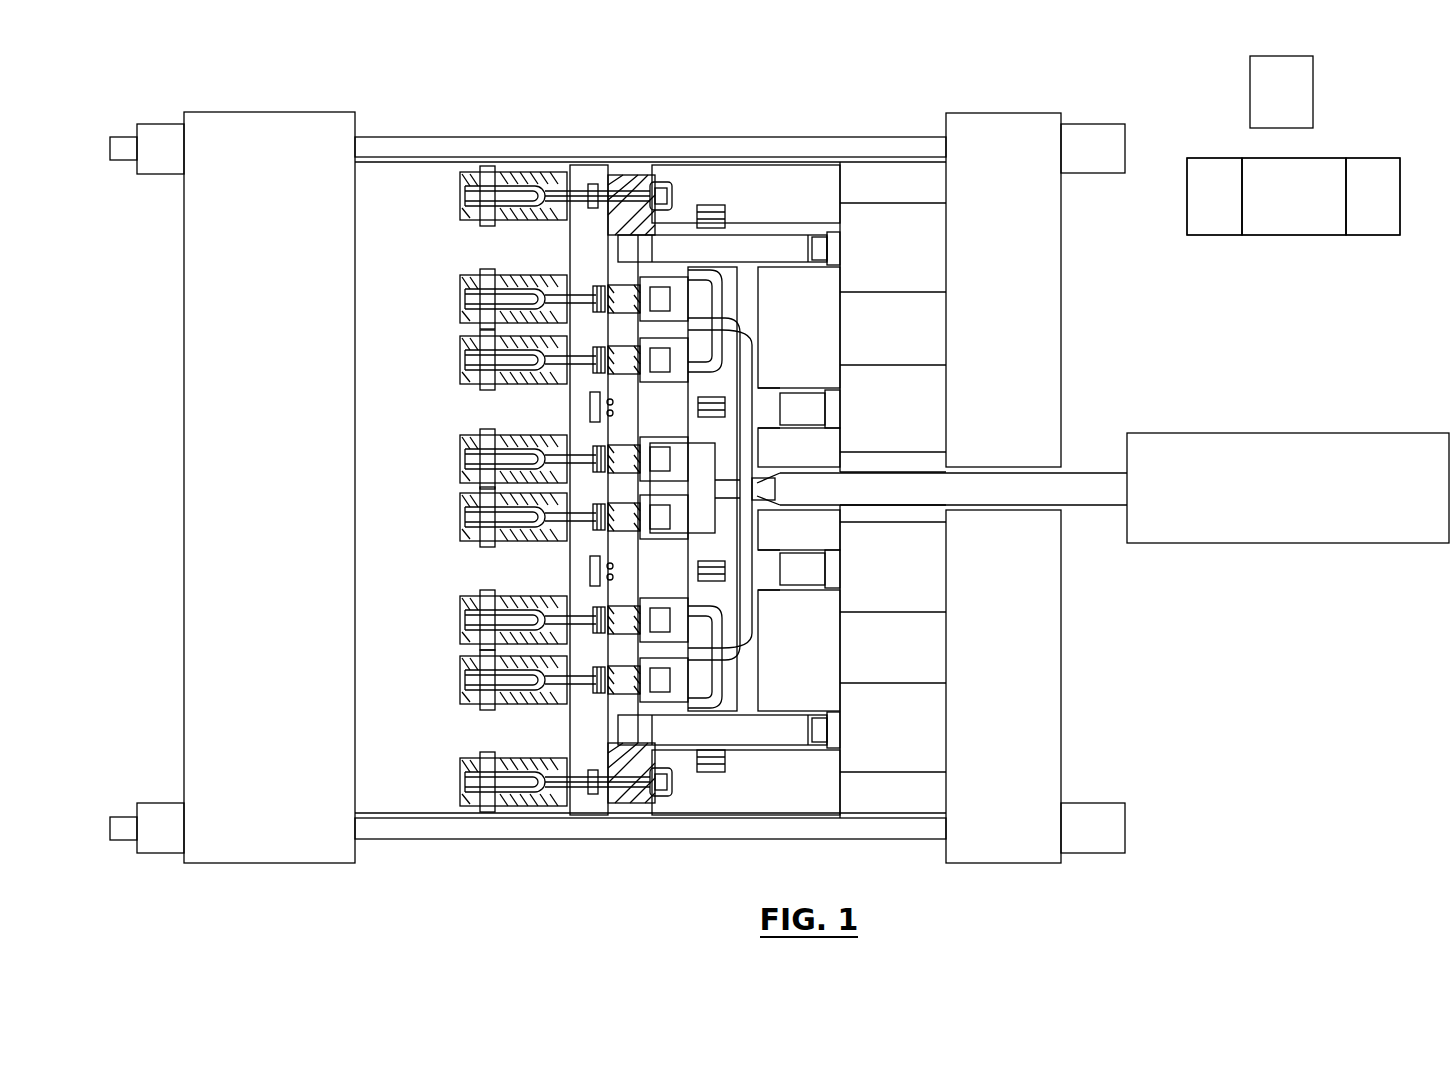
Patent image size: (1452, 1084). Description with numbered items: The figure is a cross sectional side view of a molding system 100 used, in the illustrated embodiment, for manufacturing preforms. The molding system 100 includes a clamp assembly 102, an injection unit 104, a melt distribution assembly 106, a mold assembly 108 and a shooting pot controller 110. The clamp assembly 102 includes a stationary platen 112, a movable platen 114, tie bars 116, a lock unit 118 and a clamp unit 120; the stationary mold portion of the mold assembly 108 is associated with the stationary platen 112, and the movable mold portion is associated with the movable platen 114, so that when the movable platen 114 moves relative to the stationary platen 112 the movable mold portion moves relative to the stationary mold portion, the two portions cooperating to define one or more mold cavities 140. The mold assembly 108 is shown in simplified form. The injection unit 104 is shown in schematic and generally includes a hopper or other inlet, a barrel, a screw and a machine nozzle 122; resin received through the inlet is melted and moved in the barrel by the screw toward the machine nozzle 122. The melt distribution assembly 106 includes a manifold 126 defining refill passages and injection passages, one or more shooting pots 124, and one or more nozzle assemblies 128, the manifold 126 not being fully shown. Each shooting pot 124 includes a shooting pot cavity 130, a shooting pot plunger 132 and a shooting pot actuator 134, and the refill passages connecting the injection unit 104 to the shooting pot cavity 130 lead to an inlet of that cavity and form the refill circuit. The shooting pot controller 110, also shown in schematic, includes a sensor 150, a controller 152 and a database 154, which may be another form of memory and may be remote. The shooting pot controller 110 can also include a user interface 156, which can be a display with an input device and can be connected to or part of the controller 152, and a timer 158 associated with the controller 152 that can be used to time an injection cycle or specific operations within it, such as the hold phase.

The molding system 100 is at (165, 527).
The clamp assembly 102 is at (1120, 870).
The injection unit 104 is at (1345, 568).
The melt distribution assembly 106 is at (756, 788).
The mold assembly 108 is at (460, 802).
The shooting pot controller 110 is at (1282, 264).
The stationary platen 112 is at (1030, 137).
The movable platen 114 is at (305, 127).
The tie bars 116 is at (480, 150).
The lock unit 118 is at (158, 124).
The clamp unit 120 is at (1120, 145).
The machine nozzle 122 is at (1017, 495).
The shooting pot 124 is at (677, 236).
The manifold 126 is at (752, 355).
The nozzle assembly 128 is at (610, 815).
The shooting pot cavity 130 is at (650, 727).
The shooting pot plunger 132 is at (808, 735).
The shooting pot actuator 134 is at (930, 740).
The mold cavity 140 is at (515, 530).
The sensor 150 is at (715, 210).
The controller 152 is at (1287, 240).
The database 154 is at (1300, 100).
The user interface 156 is at (1370, 218).
The timer 158 is at (1207, 218).